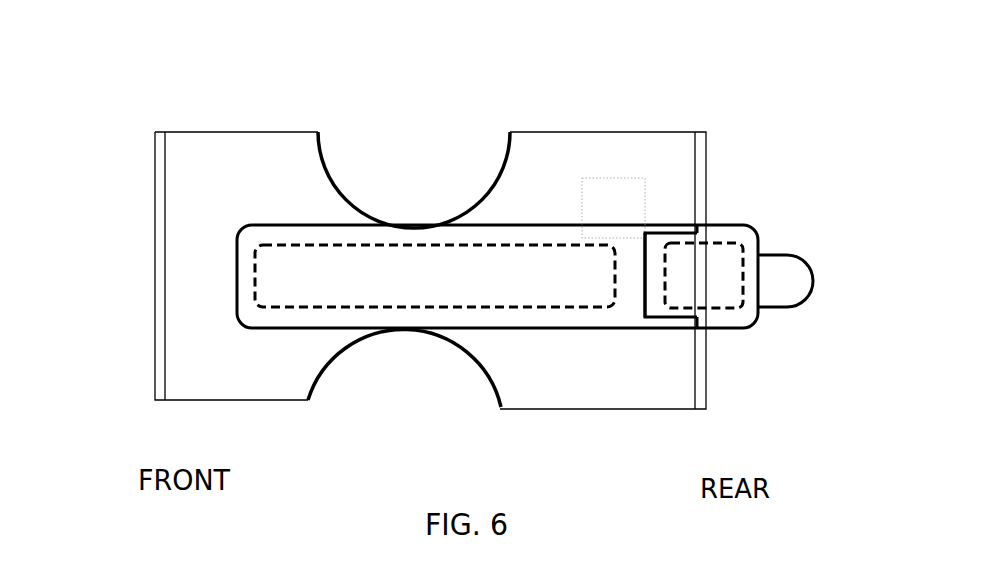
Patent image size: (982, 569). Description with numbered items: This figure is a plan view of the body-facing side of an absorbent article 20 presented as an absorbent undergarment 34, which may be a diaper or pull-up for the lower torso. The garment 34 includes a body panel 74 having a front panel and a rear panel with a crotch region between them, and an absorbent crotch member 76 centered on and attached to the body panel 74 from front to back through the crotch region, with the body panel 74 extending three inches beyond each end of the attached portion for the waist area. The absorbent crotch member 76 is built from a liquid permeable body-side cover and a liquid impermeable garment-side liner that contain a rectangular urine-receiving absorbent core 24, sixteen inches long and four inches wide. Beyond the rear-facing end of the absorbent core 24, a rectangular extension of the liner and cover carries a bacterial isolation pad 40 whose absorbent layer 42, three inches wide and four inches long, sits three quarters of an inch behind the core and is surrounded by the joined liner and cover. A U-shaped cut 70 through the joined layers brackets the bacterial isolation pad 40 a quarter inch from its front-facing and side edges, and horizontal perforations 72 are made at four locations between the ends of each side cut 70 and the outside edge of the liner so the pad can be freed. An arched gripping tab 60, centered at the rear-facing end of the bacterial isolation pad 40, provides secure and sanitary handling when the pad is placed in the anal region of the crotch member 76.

The absorbent article 20 is at (421, 232).
The absorbent undergarment 34 is at (541, 245).
The absorbent core 24 is at (368, 265).
The absorbent crotch member 76 is at (495, 223).
The horizontal perforations 72 is at (693, 225).
The bacterial isolation pad 40 is at (727, 223).
The absorbent layer 42 is at (735, 245).
The arched gripping tab 60 is at (787, 298).
The U-shaped cut 70 is at (645, 290).
The body panel 74 is at (207, 327).